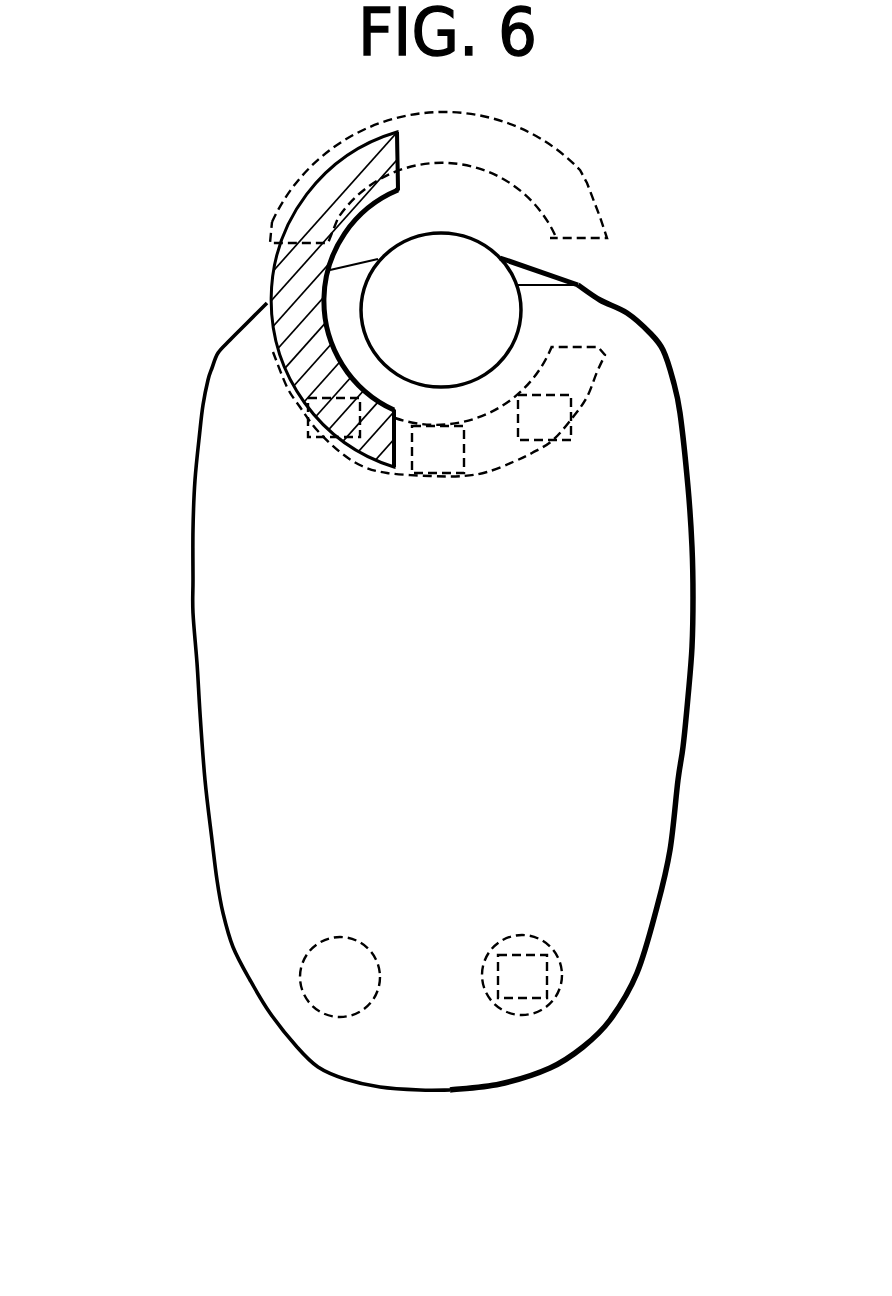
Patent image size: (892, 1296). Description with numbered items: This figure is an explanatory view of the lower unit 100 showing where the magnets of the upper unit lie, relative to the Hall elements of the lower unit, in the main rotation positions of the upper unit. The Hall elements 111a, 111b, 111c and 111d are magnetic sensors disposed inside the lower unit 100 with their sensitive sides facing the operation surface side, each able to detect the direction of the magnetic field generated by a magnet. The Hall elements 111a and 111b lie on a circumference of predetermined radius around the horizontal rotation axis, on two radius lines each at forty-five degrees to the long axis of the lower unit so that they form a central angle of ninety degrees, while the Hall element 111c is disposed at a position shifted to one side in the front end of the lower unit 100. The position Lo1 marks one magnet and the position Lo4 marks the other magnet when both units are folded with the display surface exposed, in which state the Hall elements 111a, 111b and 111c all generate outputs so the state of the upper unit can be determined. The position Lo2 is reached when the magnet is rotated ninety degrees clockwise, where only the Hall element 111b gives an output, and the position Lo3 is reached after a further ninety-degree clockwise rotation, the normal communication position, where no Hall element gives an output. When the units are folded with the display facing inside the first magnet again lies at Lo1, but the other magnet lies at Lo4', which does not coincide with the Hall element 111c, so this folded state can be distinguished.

The lower unit 100 is at (204, 804).
The Hall element 111a is at (560, 398).
The Hall element 111b is at (308, 435).
The Hall element 111c is at (562, 973).
The Hall element 111d is at (480, 473).
The position of the magnet Lo1 is at (527, 455).
The position of the magnet Lo2 is at (268, 287).
The position of the magnet Lo3 is at (582, 171).
The position of the magnet Lo4 is at (586, 1032).
The position of the magnet Lo4' is at (255, 995).